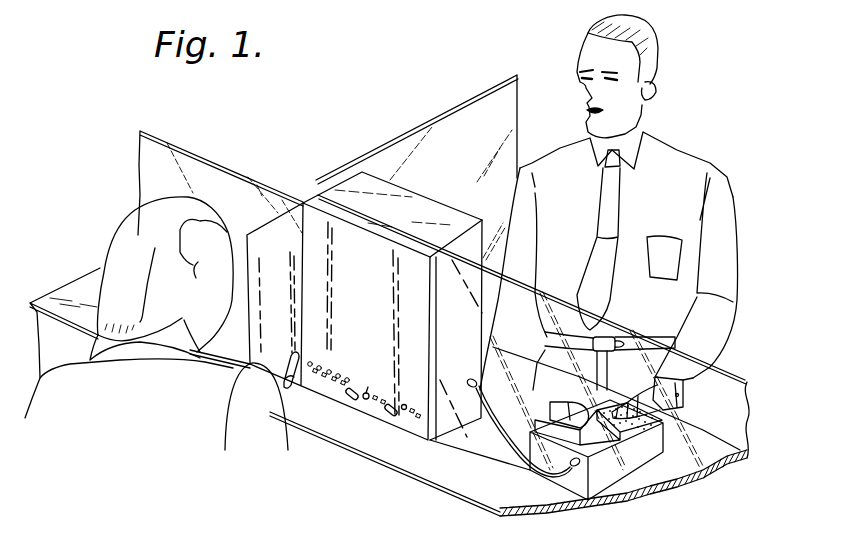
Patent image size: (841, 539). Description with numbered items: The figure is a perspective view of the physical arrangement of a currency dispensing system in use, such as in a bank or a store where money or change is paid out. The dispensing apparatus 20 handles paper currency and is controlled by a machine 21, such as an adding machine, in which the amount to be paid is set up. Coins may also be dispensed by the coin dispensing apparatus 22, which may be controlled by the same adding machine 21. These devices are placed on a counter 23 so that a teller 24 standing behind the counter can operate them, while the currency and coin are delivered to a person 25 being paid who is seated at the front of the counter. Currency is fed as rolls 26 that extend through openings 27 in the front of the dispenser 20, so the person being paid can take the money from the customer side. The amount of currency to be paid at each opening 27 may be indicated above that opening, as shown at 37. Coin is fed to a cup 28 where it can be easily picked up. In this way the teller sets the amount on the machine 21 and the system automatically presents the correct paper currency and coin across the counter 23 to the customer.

The dispensing apparatus 20 is at (417, 202).
The machine 21 is at (627, 462).
The coin dispensing apparatus 22 is at (279, 303).
The counter 23 is at (463, 484).
The teller 24 is at (697, 168).
The person being paid 25 is at (156, 404).
The rolls 26 is at (387, 412).
The openings 27 is at (367, 390).
The cup 28 is at (288, 386).
The amount indication 37 is at (405, 404).